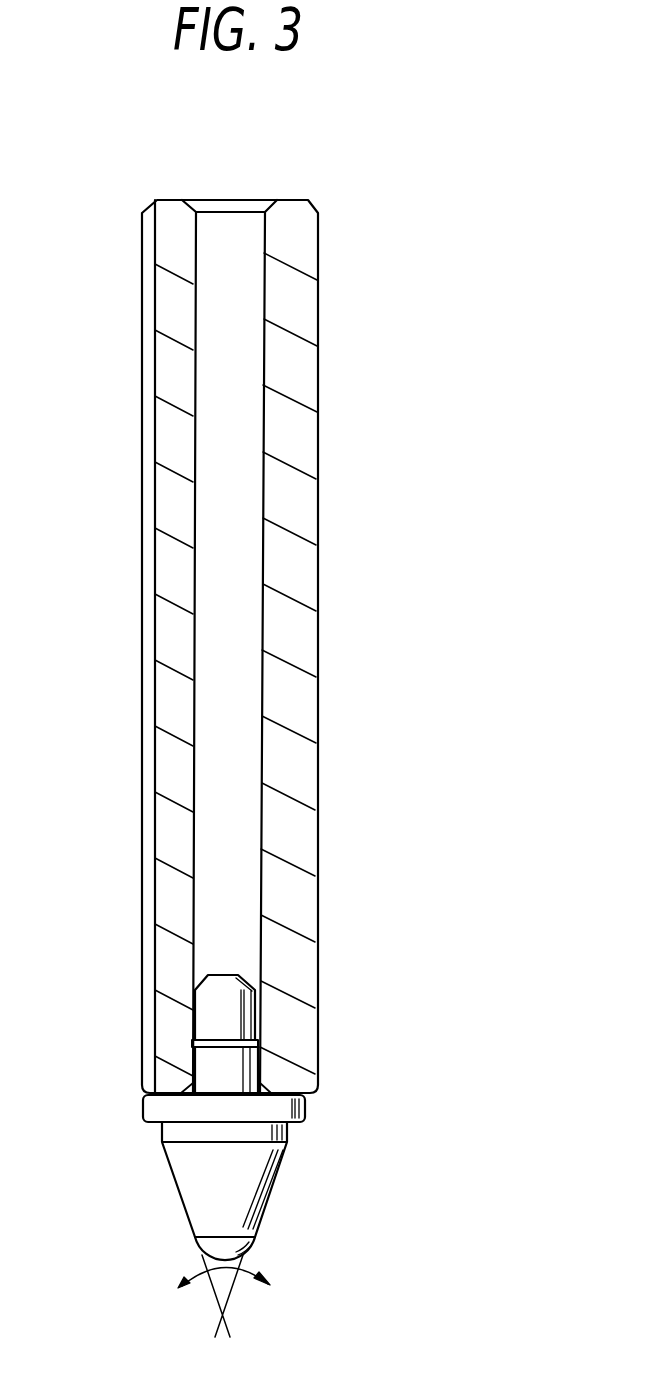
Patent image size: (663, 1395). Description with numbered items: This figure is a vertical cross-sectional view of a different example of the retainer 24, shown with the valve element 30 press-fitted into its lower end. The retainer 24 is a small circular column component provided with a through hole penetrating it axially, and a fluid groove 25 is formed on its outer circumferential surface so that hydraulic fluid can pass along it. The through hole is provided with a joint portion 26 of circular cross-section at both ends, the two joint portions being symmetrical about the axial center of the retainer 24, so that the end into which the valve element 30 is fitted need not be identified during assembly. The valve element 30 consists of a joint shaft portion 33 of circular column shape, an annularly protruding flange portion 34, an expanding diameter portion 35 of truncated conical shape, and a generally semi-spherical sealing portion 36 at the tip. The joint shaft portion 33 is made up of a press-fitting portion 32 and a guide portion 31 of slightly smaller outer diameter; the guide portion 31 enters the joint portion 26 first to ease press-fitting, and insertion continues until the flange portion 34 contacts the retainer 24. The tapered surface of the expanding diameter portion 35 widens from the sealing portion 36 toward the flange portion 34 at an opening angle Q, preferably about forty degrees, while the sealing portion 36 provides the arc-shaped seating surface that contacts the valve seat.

The retainer 24 is at (308, 449).
The fluid groove 25 is at (147, 572).
The joint portion 26 is at (228, 222).
The valve element 30 is at (229, 1204).
The guide portion 31 is at (259, 1002).
The press-fitting portion 32 is at (259, 1066).
The joint shaft portion 33 is at (317, 1034).
The flange portion 34 is at (305, 1113).
The expanding diameter portion 35 is at (267, 1195).
The sealing portion 36 is at (247, 1252).
The opening angle Q is at (227, 1296).